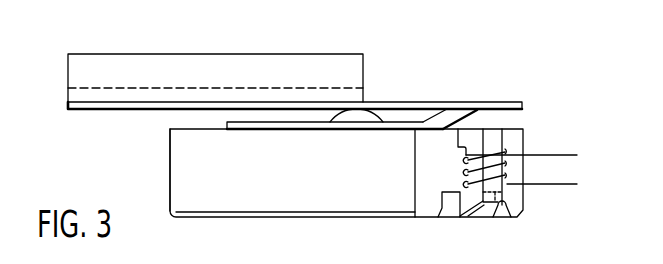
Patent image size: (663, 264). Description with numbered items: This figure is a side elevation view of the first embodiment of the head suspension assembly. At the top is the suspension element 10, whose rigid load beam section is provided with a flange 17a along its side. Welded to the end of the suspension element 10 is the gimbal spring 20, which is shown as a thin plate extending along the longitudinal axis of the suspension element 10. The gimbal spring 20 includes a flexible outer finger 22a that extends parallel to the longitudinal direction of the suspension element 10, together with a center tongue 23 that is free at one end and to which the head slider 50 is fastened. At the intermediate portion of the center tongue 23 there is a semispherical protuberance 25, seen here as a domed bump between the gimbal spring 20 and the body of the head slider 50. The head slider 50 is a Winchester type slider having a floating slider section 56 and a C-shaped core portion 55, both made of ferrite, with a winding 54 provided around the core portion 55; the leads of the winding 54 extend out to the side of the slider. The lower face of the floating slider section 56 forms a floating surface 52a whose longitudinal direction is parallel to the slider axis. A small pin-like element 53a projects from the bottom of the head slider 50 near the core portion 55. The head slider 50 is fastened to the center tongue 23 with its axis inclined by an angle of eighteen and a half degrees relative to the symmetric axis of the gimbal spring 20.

The suspension element 10 is at (183, 52).
The flange 17a is at (126, 72).
The gimbal spring 20 is at (502, 100).
The flexible outer finger 22a is at (400, 100).
The center tongue 23 is at (423, 122).
The semispherical protuberance 25 is at (358, 118).
The head slider 50 is at (163, 172).
The floating surface 52a is at (332, 219).
The terminal pin 53a is at (508, 219).
The winding 54 is at (557, 185).
The C-shaped core portion 55 is at (500, 143).
The floating slider section 56 is at (178, 141).